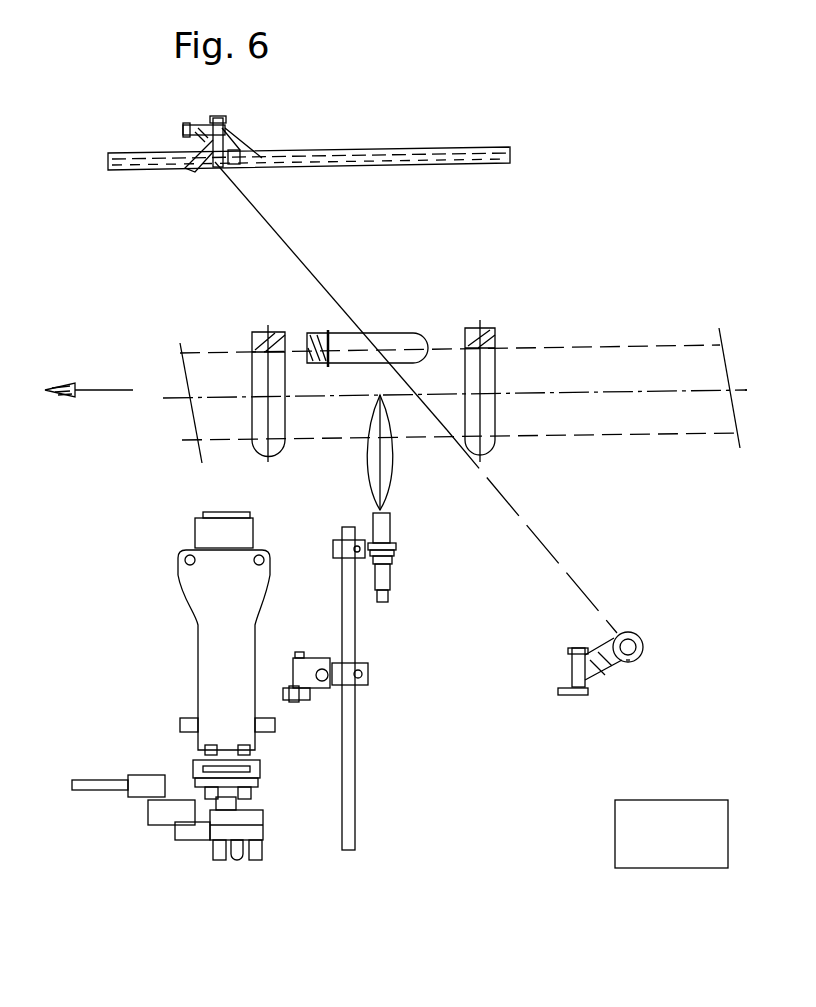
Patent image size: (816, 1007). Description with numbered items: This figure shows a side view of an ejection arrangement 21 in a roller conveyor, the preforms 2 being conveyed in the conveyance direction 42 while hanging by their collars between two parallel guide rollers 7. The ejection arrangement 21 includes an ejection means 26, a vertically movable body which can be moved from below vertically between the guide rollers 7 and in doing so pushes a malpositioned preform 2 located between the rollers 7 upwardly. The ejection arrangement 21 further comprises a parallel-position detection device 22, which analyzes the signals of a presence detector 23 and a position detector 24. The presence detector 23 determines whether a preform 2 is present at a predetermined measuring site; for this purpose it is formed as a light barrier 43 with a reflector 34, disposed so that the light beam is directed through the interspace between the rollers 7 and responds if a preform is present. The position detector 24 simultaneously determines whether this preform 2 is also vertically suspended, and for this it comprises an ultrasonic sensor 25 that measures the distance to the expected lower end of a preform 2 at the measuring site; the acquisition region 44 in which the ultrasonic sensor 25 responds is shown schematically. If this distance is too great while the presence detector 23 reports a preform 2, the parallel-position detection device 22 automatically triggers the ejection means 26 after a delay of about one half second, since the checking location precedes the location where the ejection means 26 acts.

The preform 2 is at (397, 342).
The roller 7 is at (641, 372).
The ejection arrangement 21 is at (173, 655).
The parallel-position detection device 22 is at (660, 848).
The presence detector 23 is at (641, 675).
The position detector 24 is at (375, 797).
The ultrasonic sensor 25 is at (384, 525).
The ejection means 26 is at (210, 537).
The reflector 34 is at (267, 148).
The conveyance direction 42 is at (75, 390).
The light barrier 43 is at (628, 665).
The acquisition region 44 is at (389, 460).